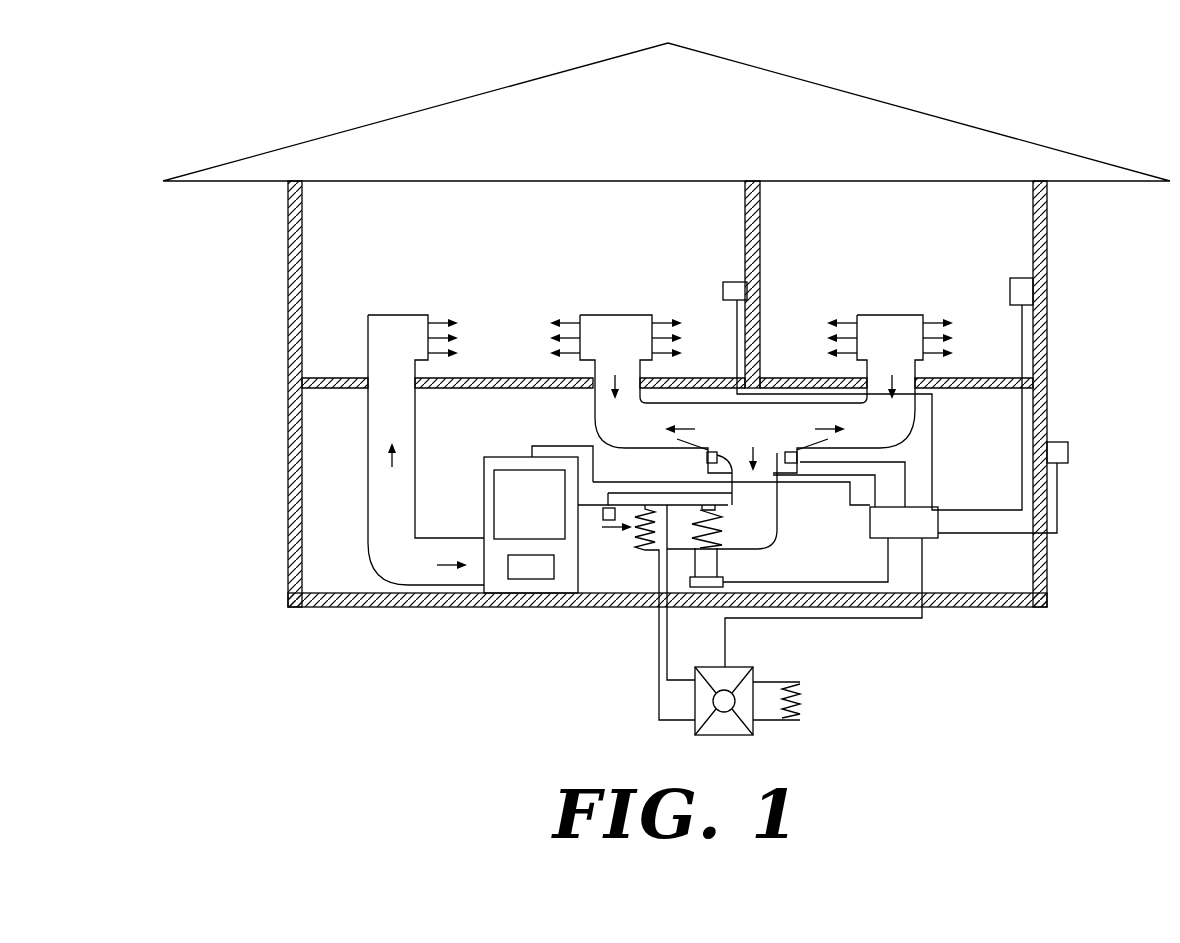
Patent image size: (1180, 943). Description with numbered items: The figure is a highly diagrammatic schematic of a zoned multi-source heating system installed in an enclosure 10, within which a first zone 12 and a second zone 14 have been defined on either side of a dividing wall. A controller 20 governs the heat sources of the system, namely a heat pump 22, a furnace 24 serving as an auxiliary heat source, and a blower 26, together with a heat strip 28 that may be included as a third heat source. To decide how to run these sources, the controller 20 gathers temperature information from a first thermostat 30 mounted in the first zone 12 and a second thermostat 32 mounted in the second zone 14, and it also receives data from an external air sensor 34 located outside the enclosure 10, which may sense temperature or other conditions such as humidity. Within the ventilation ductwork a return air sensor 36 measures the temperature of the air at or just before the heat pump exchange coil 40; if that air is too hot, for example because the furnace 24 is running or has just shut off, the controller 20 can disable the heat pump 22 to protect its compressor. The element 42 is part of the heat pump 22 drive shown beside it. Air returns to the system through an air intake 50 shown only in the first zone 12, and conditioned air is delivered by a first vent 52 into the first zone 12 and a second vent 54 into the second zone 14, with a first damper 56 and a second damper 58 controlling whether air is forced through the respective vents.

The enclosure 10 is at (389, 78).
The first zone 12 is at (383, 255).
The second zone 14 is at (985, 245).
The controller 20 is at (938, 535).
The heat pump 22 is at (718, 737).
The furnace 24 is at (510, 525).
The blower 26 is at (530, 572).
The heat strip 28 is at (703, 590).
The first thermostat 30 is at (727, 282).
The second thermostat 32 is at (1022, 292).
The external air sensor 34 is at (1068, 450).
The return air sensor 36 is at (606, 522).
The heat pump exchange coil 40 is at (645, 552).
The motor winding 42 is at (795, 730).
The air intake 50 is at (383, 340).
The first vent 52 is at (614, 315).
The second vent 54 is at (892, 315).
The first damper 56 is at (716, 460).
The second damper 58 is at (795, 462).